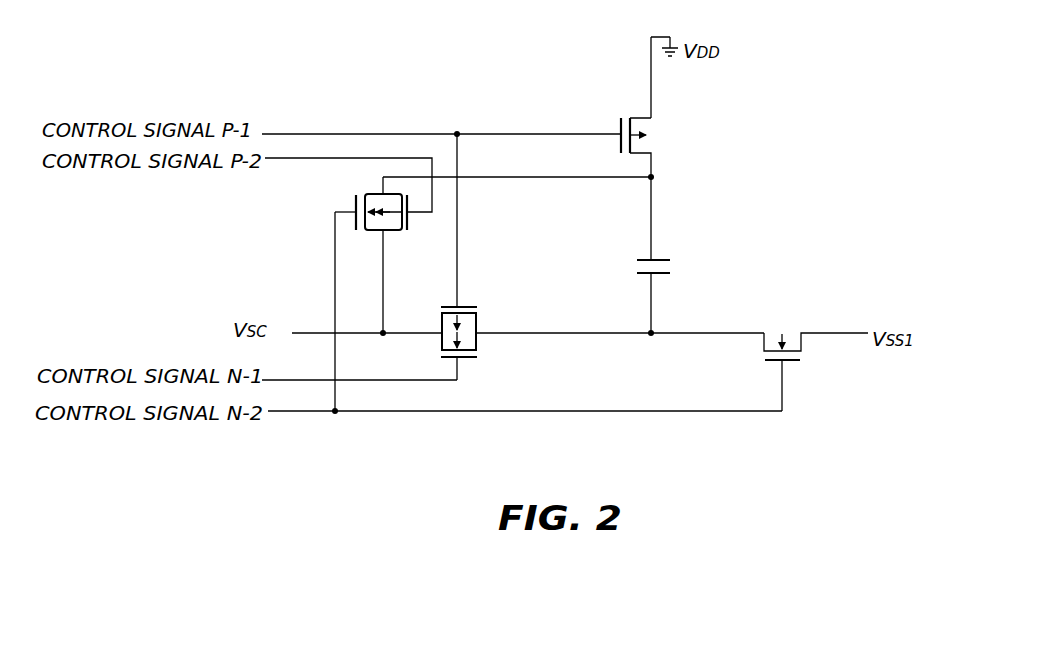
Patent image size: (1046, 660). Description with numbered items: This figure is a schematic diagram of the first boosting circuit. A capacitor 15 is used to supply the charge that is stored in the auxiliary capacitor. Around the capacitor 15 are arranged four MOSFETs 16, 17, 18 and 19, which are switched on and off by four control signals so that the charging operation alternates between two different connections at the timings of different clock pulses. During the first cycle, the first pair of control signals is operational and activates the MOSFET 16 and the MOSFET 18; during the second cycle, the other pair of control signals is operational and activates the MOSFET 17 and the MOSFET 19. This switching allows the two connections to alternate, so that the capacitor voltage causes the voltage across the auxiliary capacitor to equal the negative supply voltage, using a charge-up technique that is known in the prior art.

The capacitor 15 is at (664, 269).
The MOSFET 16 is at (636, 125).
The MOSFET 17 is at (396, 232).
The MOSFET 18 is at (478, 313).
The MOSFET 19 is at (789, 349).